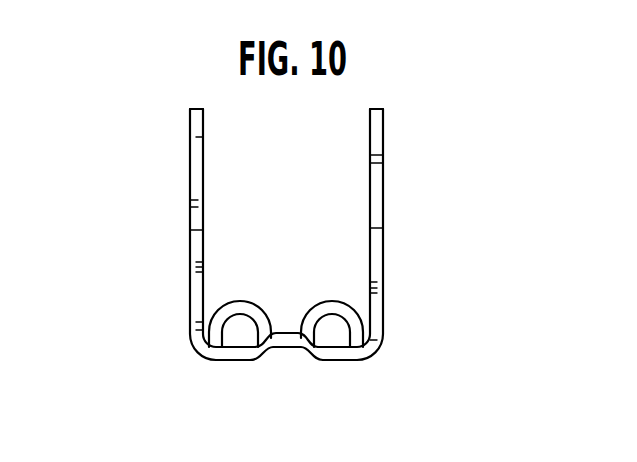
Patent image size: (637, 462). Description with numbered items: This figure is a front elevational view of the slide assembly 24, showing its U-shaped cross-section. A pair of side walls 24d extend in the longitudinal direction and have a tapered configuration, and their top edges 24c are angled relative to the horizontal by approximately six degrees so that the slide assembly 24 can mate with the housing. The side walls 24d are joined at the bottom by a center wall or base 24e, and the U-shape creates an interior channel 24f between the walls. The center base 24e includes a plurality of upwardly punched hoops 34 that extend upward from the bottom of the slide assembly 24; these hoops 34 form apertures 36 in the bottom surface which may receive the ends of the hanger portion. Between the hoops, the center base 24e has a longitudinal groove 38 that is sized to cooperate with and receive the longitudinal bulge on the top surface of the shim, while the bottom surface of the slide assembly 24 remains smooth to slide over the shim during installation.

The slide assembly 24 is at (437, 192).
The top edges 24c is at (195, 120).
The side walls 24d is at (189, 282).
The center wall or base 24e is at (278, 348).
The interior channel 24f is at (320, 128).
The hoops 34 is at (230, 308).
The apertures 36 is at (237, 330).
The longitudinal groove 38 is at (300, 349).